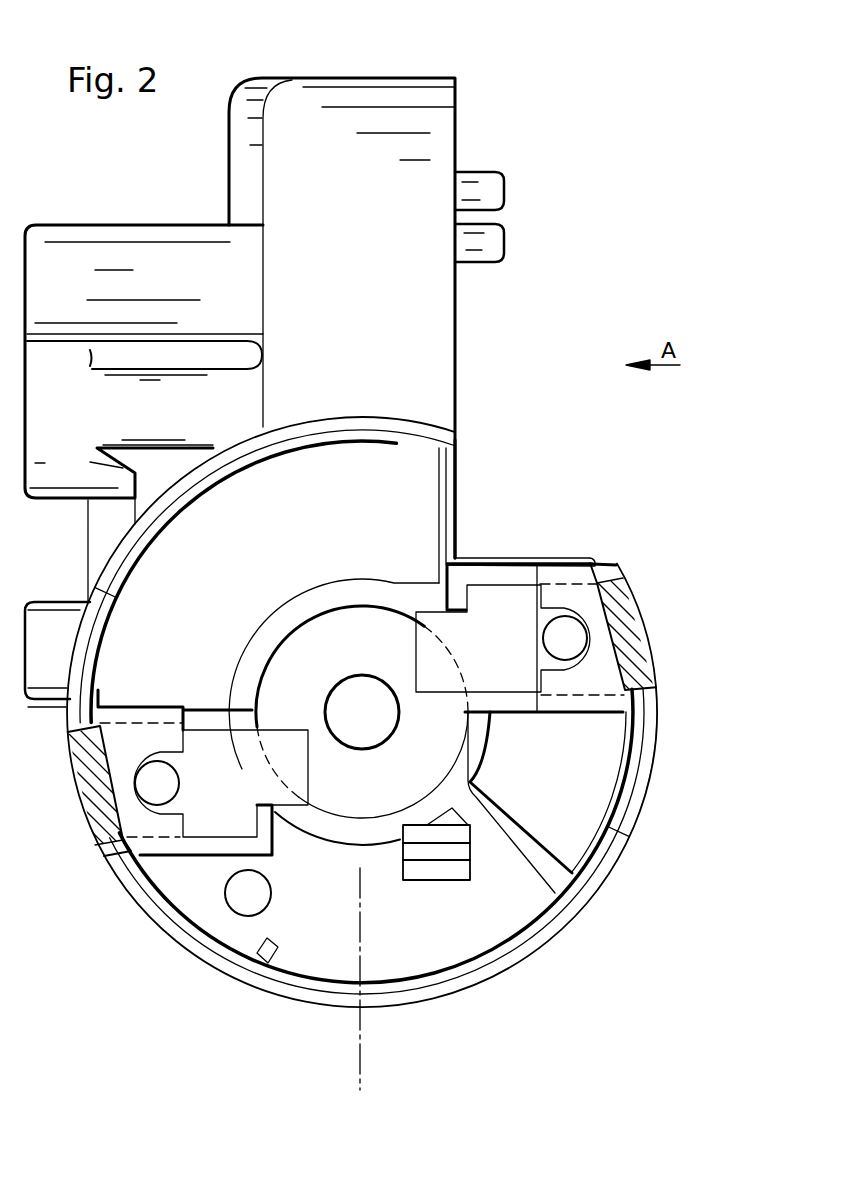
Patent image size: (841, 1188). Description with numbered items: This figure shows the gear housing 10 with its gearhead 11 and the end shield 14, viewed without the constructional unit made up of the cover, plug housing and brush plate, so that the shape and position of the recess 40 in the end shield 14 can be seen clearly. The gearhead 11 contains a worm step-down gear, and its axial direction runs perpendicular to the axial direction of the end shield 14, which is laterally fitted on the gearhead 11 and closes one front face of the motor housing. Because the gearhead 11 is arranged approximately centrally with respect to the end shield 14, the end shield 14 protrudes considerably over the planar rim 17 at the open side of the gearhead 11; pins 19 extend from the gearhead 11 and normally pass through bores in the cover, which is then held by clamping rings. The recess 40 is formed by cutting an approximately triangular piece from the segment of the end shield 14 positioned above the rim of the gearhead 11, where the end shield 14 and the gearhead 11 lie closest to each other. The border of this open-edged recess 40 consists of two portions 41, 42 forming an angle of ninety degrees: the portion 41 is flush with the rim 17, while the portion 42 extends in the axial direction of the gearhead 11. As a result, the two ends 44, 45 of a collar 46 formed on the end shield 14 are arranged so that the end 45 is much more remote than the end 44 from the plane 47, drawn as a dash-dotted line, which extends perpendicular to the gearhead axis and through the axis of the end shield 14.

The gear housing 10 is at (341, 62).
The gearhead 11 is at (347, 274).
The end shield 14 is at (510, 912).
The planar rim 17 is at (458, 97).
The pins 19 is at (497, 183).
The recess 40 is at (548, 484).
The portion 41 is at (458, 486).
The portion 42 is at (563, 556).
The end 44 is at (457, 443).
The end 45 is at (600, 557).
The collar 46 is at (613, 843).
The plane 47 is at (362, 1067).